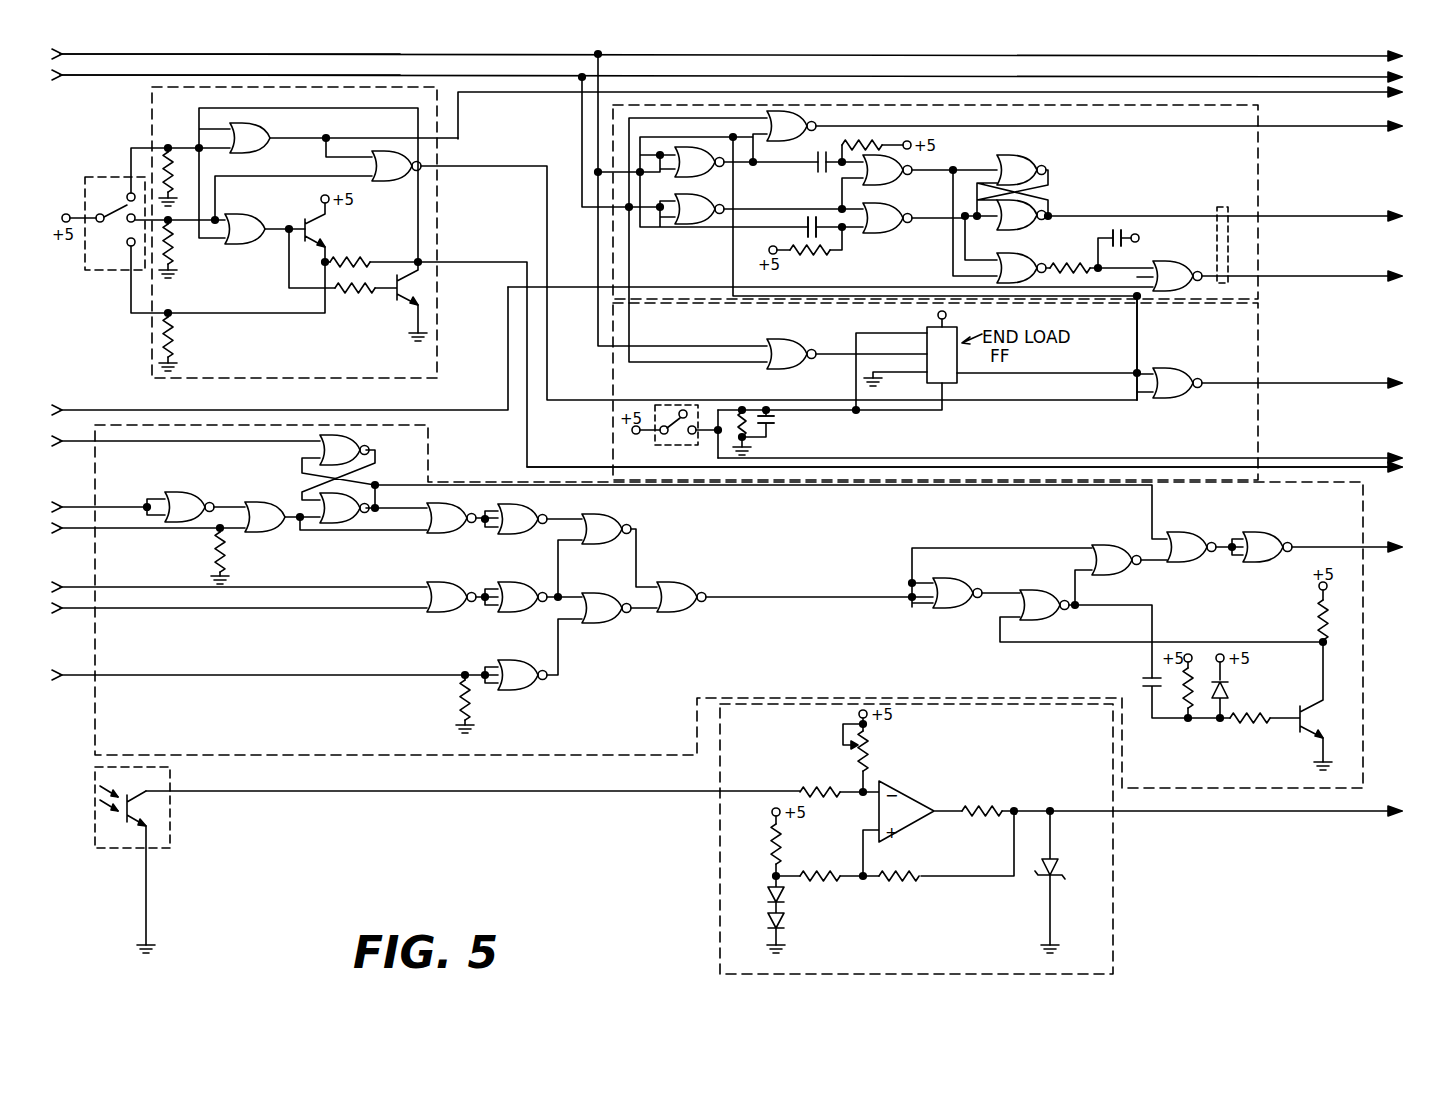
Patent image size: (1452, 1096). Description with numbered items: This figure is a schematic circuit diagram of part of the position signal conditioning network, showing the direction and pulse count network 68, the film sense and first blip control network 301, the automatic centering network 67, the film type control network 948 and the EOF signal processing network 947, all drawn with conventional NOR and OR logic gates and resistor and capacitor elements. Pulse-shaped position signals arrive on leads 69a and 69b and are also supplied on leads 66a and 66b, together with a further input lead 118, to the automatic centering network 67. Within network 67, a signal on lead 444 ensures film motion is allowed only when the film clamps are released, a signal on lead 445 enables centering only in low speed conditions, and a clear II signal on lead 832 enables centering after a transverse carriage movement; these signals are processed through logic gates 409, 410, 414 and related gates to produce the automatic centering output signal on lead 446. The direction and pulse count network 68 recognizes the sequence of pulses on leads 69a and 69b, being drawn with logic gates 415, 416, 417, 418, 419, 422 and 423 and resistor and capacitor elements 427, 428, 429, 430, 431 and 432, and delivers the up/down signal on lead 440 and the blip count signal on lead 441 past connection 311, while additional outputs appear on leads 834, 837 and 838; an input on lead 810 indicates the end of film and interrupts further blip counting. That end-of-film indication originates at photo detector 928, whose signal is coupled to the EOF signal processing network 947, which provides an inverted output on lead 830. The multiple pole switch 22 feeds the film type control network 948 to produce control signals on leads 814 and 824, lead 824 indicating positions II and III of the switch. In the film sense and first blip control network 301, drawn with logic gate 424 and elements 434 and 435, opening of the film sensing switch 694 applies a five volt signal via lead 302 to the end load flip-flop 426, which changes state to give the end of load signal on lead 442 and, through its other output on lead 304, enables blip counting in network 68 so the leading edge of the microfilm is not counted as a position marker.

The multiple pole switch 22 is at (97, 176).
The lead 66a is at (74, 576).
The lead 66b is at (72, 611).
The automatic centering network 67 is at (1366, 632).
The direction and pulse count network 68 is at (1267, 172).
The lead 69a is at (158, 56).
The lead 69b is at (97, 77).
The input line 118 is at (72, 678).
The film sense and first blip control network 301 is at (1272, 350).
The lead 302 is at (1080, 454).
The lead 304 is at (1140, 344).
The connector 311 is at (1222, 207).
The logic gate 409 is at (362, 441).
The logic gate 410 is at (316, 500).
The logic gate 414 is at (190, 486).
The NAND gate 415 is at (798, 134).
The inverter gate 416 is at (699, 209).
The inverter gate 417 is at (699, 162).
The NAND gate 418 is at (892, 226).
The NAND gate 419 is at (898, 177).
The NAND gate 422 is at (1008, 257).
The NAND gate 423 is at (1170, 263).
The NAND gate 424 is at (800, 335).
The end load flip-flop 426 is at (960, 380).
The resistor 427 is at (870, 140).
The capacitor 428 is at (819, 163).
The capacitor 429 is at (803, 227).
The resistor 430 is at (813, 256).
The resistor 431 is at (1069, 262).
The capacitor 432 is at (1135, 234).
The capacitor 434 is at (775, 440).
The resistor 435 is at (776, 420).
The lead 440 is at (1244, 217).
The lead 441 is at (1322, 277).
The lead 442 is at (1297, 383).
The lead 444 is at (72, 444).
The lead 445 is at (72, 510).
The lead 446 is at (1367, 548).
The film sensing switch 694 is at (660, 443).
The lead 810 is at (77, 410).
The lead 814 is at (984, 473).
The lead 824 is at (950, 112).
The lead 830 is at (1246, 812).
The lead 832 is at (72, 531).
The lead 834 is at (1129, 128).
The output line 837 is at (747, 57).
The output line 838 is at (747, 78).
The photo detector 928 is at (172, 834).
The EOF signal processing network 947 is at (1110, 875).
The film type control network 948 is at (438, 195).